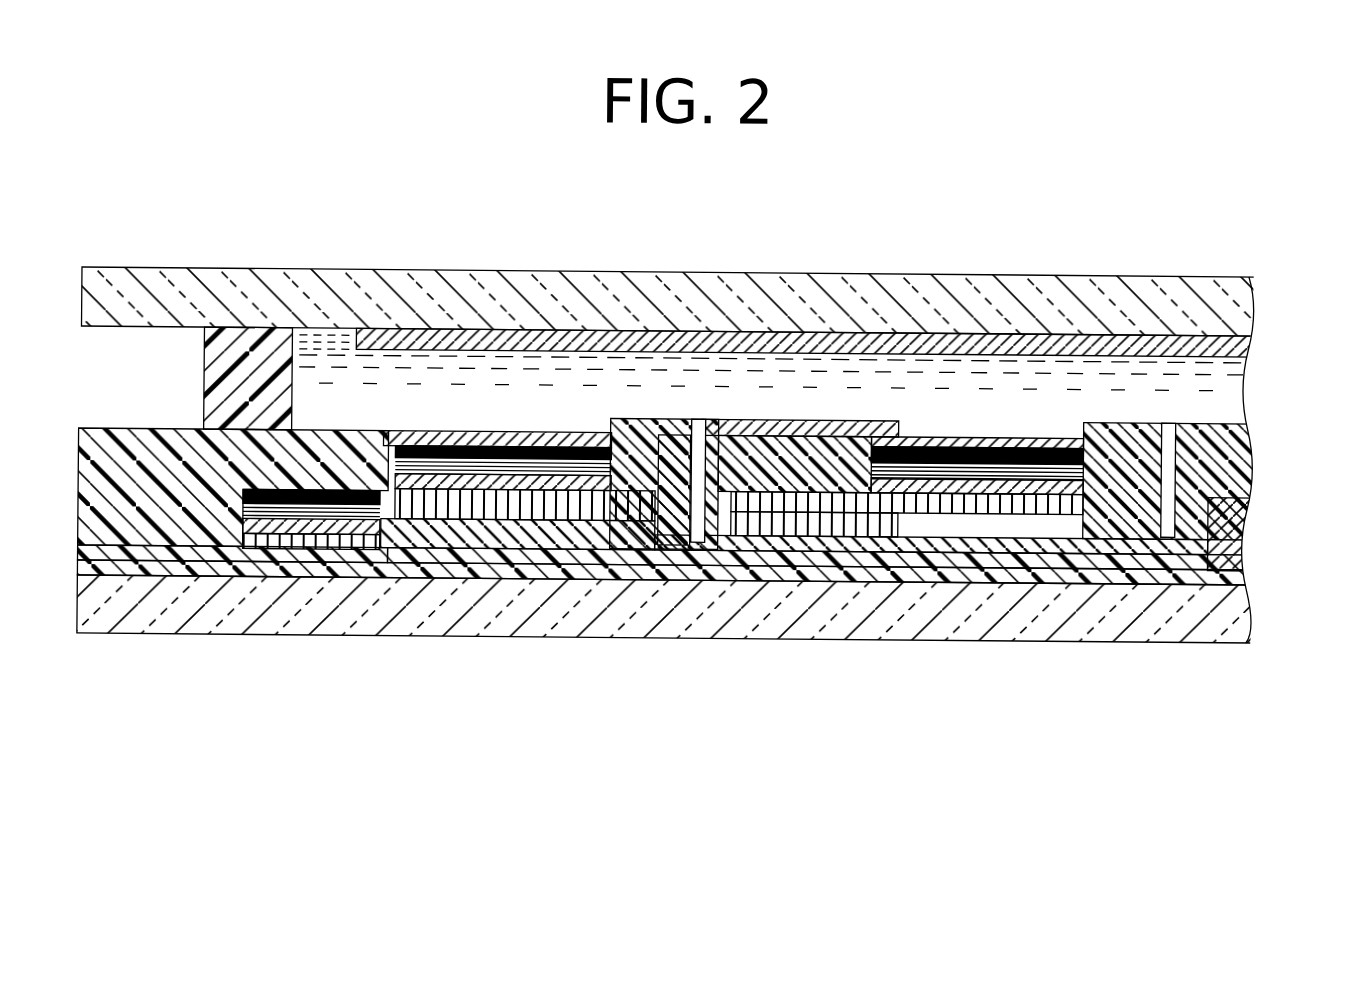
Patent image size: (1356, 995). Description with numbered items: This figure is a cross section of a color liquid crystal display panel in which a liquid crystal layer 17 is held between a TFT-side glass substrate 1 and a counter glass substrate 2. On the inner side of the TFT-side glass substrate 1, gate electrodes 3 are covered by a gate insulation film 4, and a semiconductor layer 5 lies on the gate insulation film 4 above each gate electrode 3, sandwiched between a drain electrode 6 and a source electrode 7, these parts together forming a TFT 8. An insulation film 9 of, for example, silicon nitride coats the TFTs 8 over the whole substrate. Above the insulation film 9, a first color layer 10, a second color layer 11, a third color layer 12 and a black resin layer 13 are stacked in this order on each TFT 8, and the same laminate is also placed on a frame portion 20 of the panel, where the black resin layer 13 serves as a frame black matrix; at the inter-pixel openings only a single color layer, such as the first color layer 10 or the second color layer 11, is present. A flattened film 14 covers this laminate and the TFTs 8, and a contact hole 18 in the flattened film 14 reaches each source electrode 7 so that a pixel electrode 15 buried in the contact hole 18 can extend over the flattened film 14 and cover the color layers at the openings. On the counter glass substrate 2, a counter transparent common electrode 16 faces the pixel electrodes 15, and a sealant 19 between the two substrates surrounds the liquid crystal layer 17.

The TFT-side glass substrate 1 is at (935, 612).
The counter glass substrate 2 is at (845, 297).
The gate electrode 3 is at (560, 568).
The gate insulation film 4 is at (325, 571).
The semiconductor layer 5 is at (598, 532).
The drain electrode 6 is at (455, 558).
The source electrode 7 is at (715, 546).
The TFT 8 is at (587, 730).
The insulation film 9 is at (232, 548).
The first color layer 10 is at (386, 530).
The second color layer 11 is at (352, 476).
The third color layer 12 is at (548, 458).
The black resin layer 13 is at (460, 443).
The flattened film 14 is at (122, 515).
The pixel electrode 15 is at (745, 420).
The counter transparent common electrode 16 is at (995, 332).
The liquid crystal layer 17 is at (650, 355).
The contact hole 18 is at (1183, 490).
The sealant 19 is at (250, 345).
The frame portion 20 is at (318, 360).